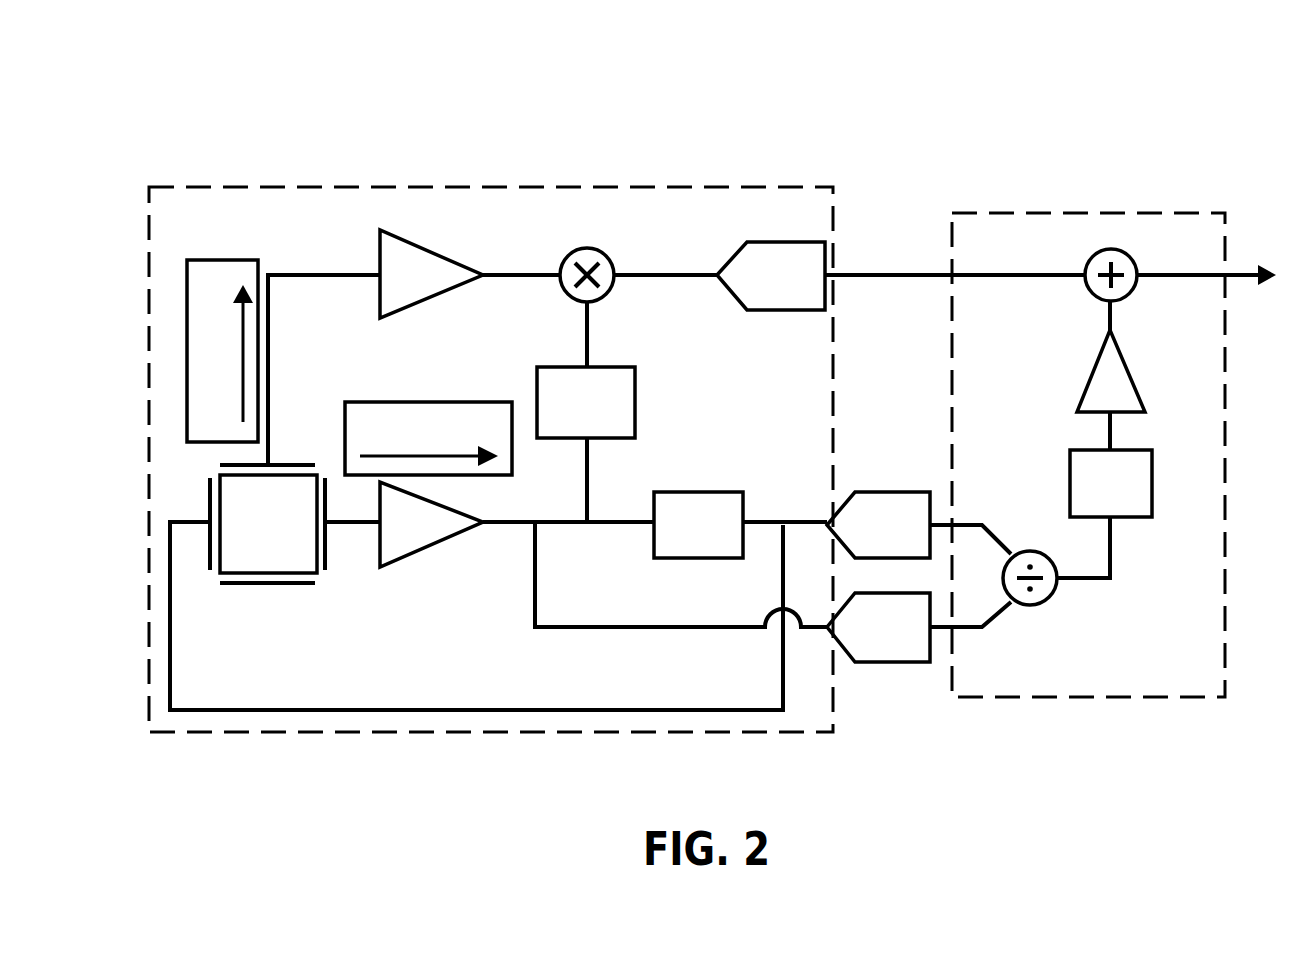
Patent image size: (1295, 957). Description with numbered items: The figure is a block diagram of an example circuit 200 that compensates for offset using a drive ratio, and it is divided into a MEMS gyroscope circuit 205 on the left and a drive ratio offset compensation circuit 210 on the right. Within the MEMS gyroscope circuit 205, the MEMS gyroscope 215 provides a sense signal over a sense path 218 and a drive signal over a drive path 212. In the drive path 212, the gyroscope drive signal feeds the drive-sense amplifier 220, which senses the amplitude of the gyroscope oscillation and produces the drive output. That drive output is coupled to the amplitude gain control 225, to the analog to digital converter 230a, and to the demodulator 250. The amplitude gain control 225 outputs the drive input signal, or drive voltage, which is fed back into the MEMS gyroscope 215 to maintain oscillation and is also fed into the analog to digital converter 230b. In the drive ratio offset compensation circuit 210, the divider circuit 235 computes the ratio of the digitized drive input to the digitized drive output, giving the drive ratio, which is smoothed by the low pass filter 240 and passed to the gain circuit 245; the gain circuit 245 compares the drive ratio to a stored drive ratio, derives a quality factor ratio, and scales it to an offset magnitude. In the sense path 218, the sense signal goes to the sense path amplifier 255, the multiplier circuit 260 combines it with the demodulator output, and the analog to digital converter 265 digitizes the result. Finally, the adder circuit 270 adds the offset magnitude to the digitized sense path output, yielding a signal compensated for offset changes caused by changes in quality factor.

The circuit 200 is at (117, 53).
The MEMS gyroscope circuit 205 is at (220, 732).
The drive ratio offset compensation circuit 210 is at (1030, 700).
The drive path 212 is at (428, 428).
The MEMS gyroscope 215 is at (290, 573).
The sense path 218 is at (210, 351).
The drive-sense amplifier 220 is at (430, 537).
The amplitude gain control 225 is at (688, 545).
The analog to digital converter 230a is at (902, 662).
The analog to digital converter 230b is at (888, 492).
The divider circuit 235 is at (1045, 603).
The low pass filter 240 is at (1148, 495).
The gain circuit 245 is at (1087, 378).
The demodulator 250 is at (635, 383).
The sense path amplifier 255 is at (447, 255).
The multiplier circuit 260 is at (597, 248).
The analog to digital converter 265 is at (778, 242).
The adder circuit 270 is at (1125, 250).